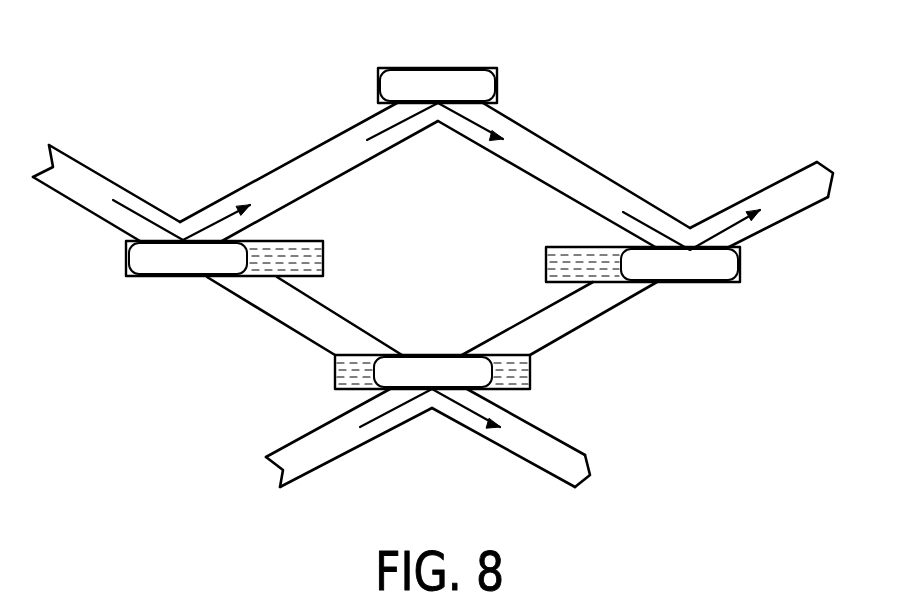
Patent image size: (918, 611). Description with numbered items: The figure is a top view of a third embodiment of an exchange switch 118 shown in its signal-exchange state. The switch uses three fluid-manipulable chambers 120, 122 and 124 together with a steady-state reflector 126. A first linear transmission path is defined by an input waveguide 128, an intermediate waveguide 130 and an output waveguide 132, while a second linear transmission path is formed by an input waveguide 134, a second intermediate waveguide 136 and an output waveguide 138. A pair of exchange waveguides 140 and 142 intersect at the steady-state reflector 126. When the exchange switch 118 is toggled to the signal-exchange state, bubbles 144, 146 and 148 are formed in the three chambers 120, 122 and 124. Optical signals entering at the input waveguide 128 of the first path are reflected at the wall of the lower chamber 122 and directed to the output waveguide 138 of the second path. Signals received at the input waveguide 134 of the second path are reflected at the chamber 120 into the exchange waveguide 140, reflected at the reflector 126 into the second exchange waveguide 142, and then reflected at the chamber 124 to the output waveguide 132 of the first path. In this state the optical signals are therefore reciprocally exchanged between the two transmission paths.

The exchange switch 118 is at (722, 380).
The fluid-manipulable chamber 120 is at (244, 258).
The fluid-manipulable chamber 122 is at (403, 358).
The fluid-manipulable chamber 124 is at (634, 261).
The steady-state reflector 126 is at (417, 78).
The input waveguide 128 is at (322, 457).
The intermediate waveguide 130 is at (596, 317).
The output waveguide 132 is at (788, 203).
The input waveguide 134 is at (92, 188).
The second intermediate waveguide 136 is at (276, 312).
The output waveguide 138 is at (535, 458).
The exchange waveguide 140 is at (312, 163).
The second exchange waveguide 142 is at (560, 165).
The bubble 144 is at (182, 278).
The bubble 146 is at (425, 360).
The bubble 148 is at (692, 277).